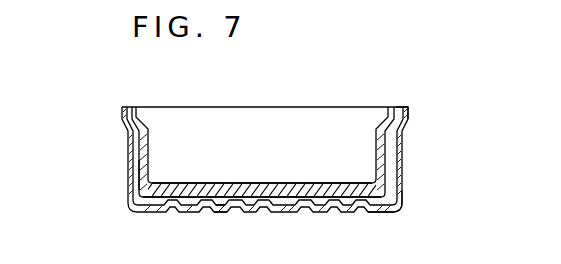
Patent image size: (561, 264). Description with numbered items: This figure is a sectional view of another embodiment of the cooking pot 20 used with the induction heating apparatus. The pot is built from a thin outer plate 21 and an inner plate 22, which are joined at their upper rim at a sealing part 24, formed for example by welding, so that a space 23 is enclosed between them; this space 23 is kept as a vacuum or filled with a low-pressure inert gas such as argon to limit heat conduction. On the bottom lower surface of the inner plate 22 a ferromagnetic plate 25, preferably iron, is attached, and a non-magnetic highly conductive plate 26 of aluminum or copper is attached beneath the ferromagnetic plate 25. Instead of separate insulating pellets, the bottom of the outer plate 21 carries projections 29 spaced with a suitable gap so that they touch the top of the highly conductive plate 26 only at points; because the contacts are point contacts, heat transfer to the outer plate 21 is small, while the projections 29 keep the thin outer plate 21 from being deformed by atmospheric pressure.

The cooking pot 20 is at (253, 107).
The outer plate 21 is at (128, 161).
The inner plate 22 is at (148, 152).
The space 23 is at (142, 176).
The sealing part 24 is at (404, 107).
The ferromagnetic plate 25 is at (374, 193).
The non-magnetic highly conductive plate 26 is at (386, 208).
The projections 29 is at (220, 212).